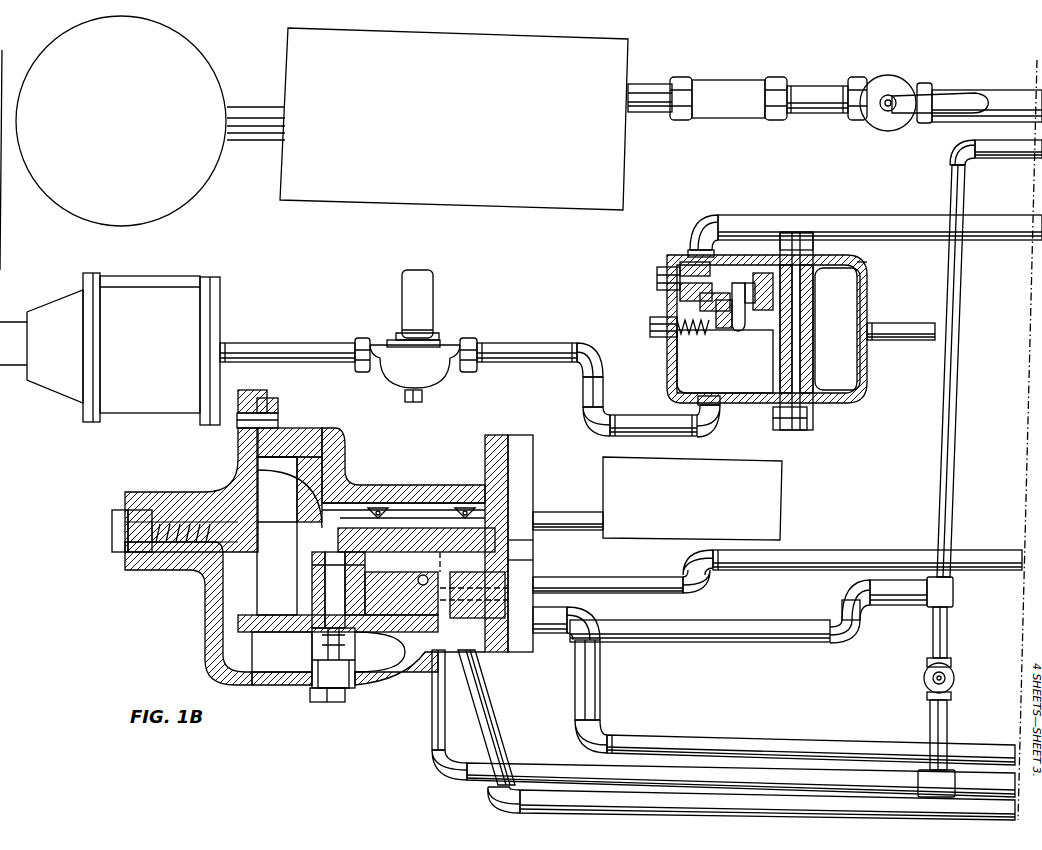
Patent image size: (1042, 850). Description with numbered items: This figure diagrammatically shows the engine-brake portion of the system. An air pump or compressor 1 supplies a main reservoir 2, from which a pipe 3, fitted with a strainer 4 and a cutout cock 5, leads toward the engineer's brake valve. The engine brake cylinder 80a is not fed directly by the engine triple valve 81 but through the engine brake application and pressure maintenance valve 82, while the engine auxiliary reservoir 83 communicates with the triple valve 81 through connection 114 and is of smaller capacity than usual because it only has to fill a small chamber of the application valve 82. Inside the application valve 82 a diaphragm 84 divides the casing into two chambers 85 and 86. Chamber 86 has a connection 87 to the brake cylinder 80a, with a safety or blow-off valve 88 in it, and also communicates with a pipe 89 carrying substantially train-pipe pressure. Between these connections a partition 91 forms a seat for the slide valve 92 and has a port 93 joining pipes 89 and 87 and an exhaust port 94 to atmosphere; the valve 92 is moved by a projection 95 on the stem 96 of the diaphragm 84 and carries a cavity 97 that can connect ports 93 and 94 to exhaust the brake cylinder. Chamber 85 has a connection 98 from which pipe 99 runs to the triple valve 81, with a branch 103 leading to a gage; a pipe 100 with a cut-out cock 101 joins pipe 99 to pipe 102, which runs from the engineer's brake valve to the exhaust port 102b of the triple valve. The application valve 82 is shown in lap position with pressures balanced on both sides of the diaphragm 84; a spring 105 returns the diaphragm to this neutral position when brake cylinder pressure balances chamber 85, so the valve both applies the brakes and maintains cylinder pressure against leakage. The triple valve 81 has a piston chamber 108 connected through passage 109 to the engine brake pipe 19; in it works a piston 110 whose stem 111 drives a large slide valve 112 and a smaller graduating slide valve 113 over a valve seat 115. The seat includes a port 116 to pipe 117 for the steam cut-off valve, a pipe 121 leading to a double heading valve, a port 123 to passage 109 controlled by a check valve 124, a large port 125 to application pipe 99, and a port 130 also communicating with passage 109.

The air pump 1 is at (150, 121).
The main reservoir 2 is at (454, 119).
The main reservoir pipe 3 is at (1022, 100).
The strainer 4 is at (747, 98).
The cutout cock 5 is at (893, 88).
The engine brake cylinder 80a is at (110, 349).
The engine triple valve 81 is at (358, 485).
The engine brake application and pressure maintenance valve 82 is at (670, 258).
The engine auxiliary reservoir 83 is at (692, 498).
The diaphragm 84 is at (790, 318).
The chamber 85 is at (837, 329).
The chamber 86 is at (725, 361).
The brake cylinder connection 87 is at (538, 352).
The safety or blow-off valve 88 is at (410, 290).
The pipe 89 is at (786, 222).
The partition 91 is at (760, 312).
The slide valve 92 is at (868, 268).
The port 93 is at (747, 312).
The exhaust port 94 is at (668, 305).
The projection 95 is at (728, 302).
The stem 96 is at (800, 318).
The cavity 97 is at (668, 281).
The connection 98 is at (915, 328).
The application pipe 99 is at (945, 432).
The pipe 100 is at (952, 630).
The cut-out cock 101 is at (922, 679).
The pipe 102 is at (793, 778).
The exhaust port 102b is at (383, 687).
The branch 103 is at (1010, 152).
The spring 105 is at (660, 337).
The piston chamber 108 is at (277, 536).
The passage 109 is at (282, 652).
The piston 110 is at (322, 573).
The stem 111 is at (388, 525).
The slide valve 112 is at (417, 525).
The graduating slide valve 113 is at (520, 540).
The connection 114 is at (558, 516).
The valve seat 115 is at (520, 560).
The port 116 is at (520, 566).
The pipe 117 is at (497, 718).
The pipe 121 is at (860, 560).
The port 123 is at (338, 567).
The check valve 124 is at (310, 696).
The port 125 is at (318, 557).
The port 130 is at (393, 627).
The engine brake pipe 19 is at (695, 740).